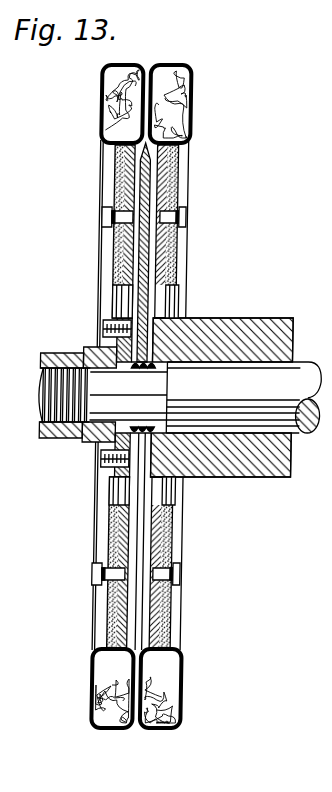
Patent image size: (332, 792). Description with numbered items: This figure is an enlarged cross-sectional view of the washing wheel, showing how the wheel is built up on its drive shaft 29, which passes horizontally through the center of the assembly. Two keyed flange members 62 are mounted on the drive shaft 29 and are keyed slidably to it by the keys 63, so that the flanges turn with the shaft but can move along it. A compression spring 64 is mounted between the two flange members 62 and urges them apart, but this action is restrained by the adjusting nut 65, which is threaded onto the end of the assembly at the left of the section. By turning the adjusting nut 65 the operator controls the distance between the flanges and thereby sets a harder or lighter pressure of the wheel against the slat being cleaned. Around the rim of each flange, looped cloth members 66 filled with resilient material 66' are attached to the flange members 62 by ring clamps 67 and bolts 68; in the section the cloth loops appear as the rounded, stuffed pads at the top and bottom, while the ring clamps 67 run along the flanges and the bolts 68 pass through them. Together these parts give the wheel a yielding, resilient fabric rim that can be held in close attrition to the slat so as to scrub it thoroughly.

The shaft 29 is at (293, 362).
The keyed flange member 62 is at (114, 299).
The key 63 is at (155, 376).
The compression spring 64 is at (167, 410).
The adjusting nut 65 is at (55, 350).
The looped cloth member 66 is at (142, 380).
The resilient material 66' is at (149, 396).
The ring clamp 67 is at (181, 183).
The bolt 68 is at (183, 222).